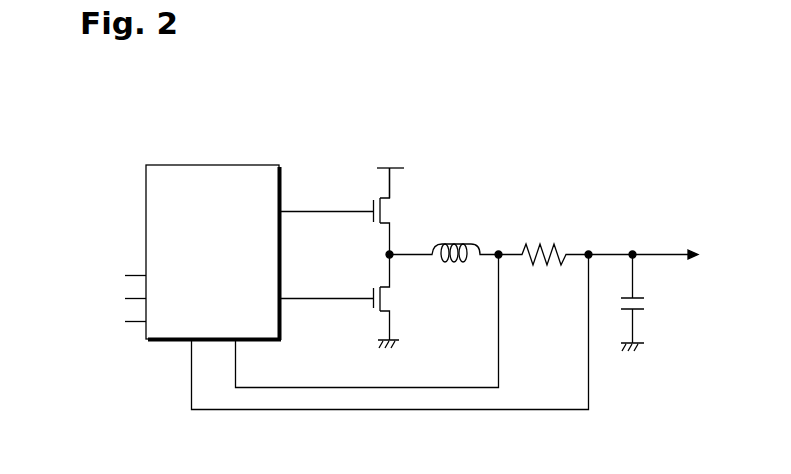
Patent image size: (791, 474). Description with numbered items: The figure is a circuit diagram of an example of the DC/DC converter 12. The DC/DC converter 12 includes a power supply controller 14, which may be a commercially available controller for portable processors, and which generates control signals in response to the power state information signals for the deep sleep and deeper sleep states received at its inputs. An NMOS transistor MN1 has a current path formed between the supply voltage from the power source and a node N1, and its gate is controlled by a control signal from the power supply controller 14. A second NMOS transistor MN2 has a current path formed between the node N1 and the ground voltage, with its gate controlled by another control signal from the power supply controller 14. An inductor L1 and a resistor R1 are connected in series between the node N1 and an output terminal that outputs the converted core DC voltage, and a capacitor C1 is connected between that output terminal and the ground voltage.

The DC/DC converter 12 is at (164, 80).
The power supply controller 14 is at (245, 165).
The NMOS transistor MN1 is at (353, 211).
The NMOS transistor MN2 is at (353, 301).
The node N1 is at (374, 255).
The inductor L1 is at (444, 244).
The resistor R1 is at (544, 245).
The capacitor C1 is at (646, 303).